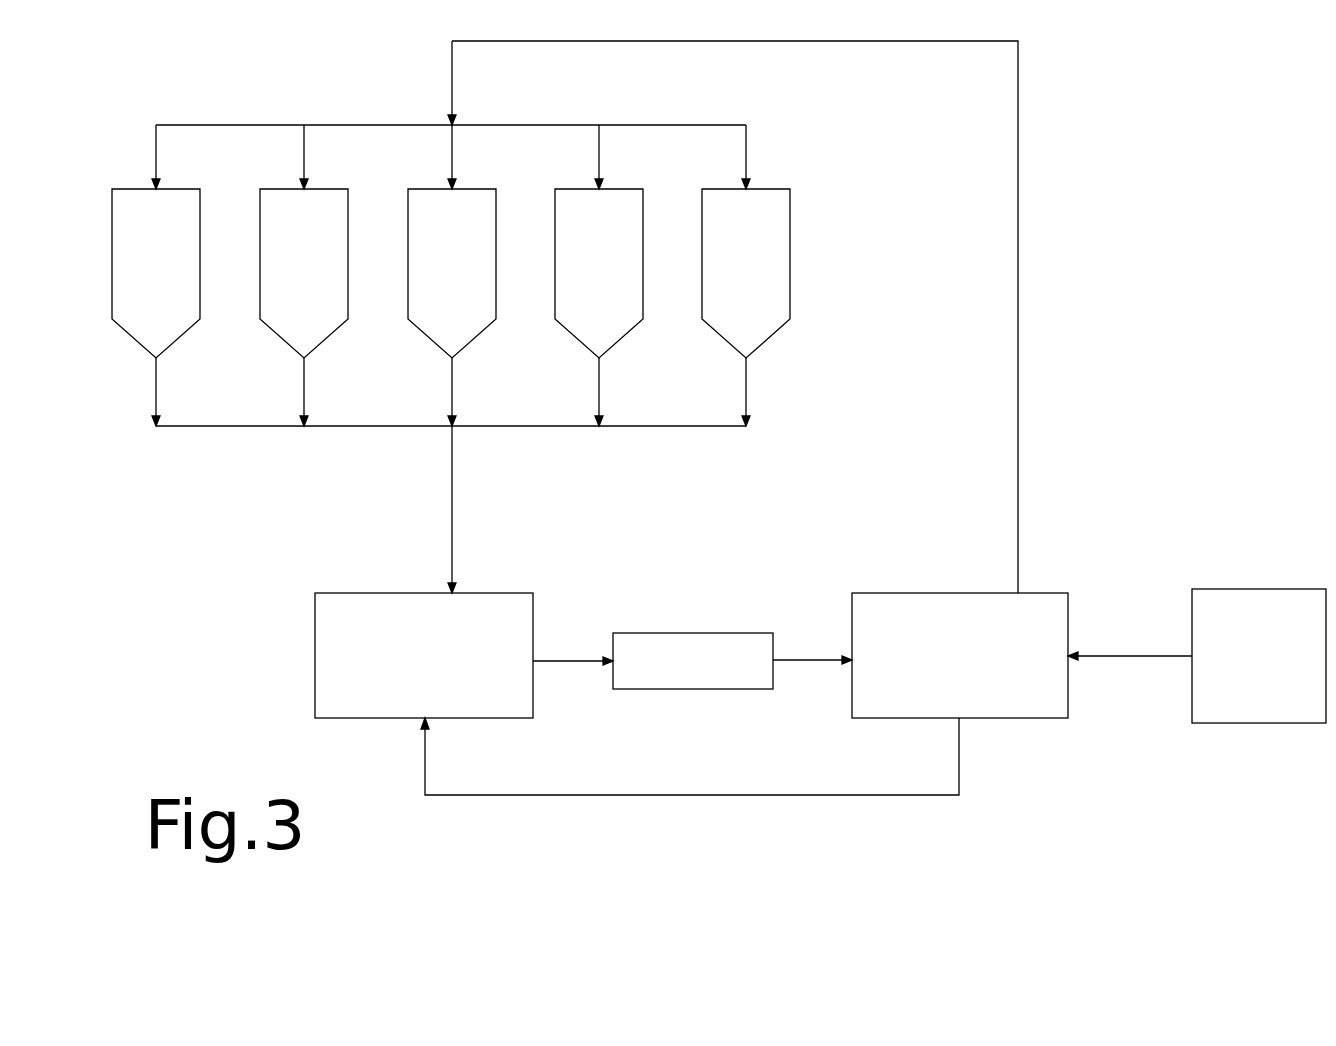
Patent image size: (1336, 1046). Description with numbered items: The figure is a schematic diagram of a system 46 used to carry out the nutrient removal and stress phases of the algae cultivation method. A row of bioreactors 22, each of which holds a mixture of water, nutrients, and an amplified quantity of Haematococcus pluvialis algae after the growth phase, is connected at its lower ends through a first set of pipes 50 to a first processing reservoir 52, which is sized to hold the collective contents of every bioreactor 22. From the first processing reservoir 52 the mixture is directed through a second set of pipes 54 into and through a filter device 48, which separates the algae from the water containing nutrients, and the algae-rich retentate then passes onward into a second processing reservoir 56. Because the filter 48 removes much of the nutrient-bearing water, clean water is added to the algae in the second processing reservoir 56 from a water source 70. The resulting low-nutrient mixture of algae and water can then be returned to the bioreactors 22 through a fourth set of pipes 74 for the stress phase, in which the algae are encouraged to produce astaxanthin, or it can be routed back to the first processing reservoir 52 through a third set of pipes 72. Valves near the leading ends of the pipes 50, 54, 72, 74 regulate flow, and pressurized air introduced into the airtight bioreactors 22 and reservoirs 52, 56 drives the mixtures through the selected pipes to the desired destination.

The bioreactor 22 is at (143, 281).
The system 46 is at (1100, 181).
The filter device 48 is at (717, 633).
The first set of pipes 50 is at (543, 426).
The first processing reservoir 52 is at (315, 615).
The second set of pipes 54 is at (572, 661).
The second processing reservoir 56 is at (1042, 593).
The water source 70 is at (1248, 589).
The third set of pipes 72 is at (880, 795).
The fourth set of pipes 74 is at (1018, 363).